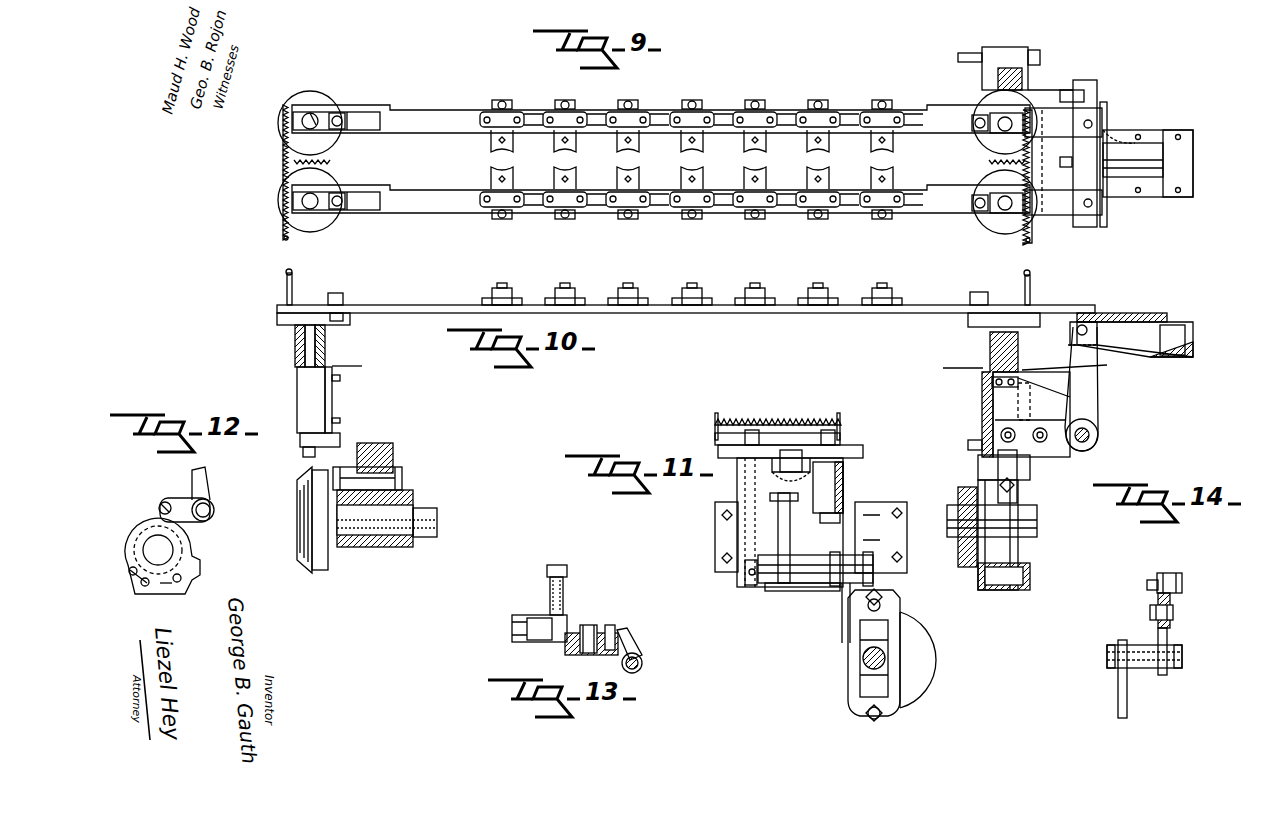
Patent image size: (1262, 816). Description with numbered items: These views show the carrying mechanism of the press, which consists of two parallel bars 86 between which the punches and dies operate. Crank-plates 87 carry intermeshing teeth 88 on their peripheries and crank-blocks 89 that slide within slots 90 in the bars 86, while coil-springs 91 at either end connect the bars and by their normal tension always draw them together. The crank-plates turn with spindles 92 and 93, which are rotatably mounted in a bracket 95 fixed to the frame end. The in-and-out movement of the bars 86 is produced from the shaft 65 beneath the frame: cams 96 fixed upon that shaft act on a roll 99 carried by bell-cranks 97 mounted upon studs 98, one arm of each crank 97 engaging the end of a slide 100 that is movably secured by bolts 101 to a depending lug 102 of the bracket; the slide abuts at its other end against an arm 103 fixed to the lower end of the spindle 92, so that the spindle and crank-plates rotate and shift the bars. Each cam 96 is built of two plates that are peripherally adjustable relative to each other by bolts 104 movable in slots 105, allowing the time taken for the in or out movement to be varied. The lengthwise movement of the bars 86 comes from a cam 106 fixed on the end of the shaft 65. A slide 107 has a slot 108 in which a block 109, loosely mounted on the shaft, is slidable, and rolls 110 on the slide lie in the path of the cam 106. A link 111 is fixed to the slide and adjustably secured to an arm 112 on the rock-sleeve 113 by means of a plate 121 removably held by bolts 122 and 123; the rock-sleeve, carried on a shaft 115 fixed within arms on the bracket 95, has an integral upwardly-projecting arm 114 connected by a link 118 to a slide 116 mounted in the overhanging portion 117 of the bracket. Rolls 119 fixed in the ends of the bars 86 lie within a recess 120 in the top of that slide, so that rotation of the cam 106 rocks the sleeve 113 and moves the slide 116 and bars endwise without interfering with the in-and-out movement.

In FIG. 9, the parallel bars 86 is at (448, 108).
In FIG. 9, the crank-plates 87 is at (315, 92).
In FIG. 9, the intermeshing teeth 88 is at (325, 162).
In FIG. 9, the crank-blocks 89 is at (340, 113).
In FIG. 9, the slots 90 is at (360, 208).
In FIG. 9, the coil-springs 91 is at (290, 160).
In FIG. 9, the spindle 93 is at (300, 118).
In FIG. 9, the slide 116 is at (1150, 143).
In FIG. 9, the recess 120 is at (1088, 180).
In FIG. 10, the spindle 92 is at (297, 350).
In FIG. 13, the spindle 92 is at (643, 664).
In FIG. 10, the studs 98 is at (393, 470).
In FIG. 10, the shaft 65 is at (437, 522).
In FIG. 10, the rolls 110 is at (980, 465).
In FIG. 10, the overhanging portion 117 is at (1175, 352).
In FIG. 10, the link 118 is at (1130, 317).
In FIG. 10, the rolls 119 is at (1088, 325).
In FIG. 11, the bracket 95 is at (843, 485).
In FIG. 11, the upwardly-projecting arm 114 is at (790, 540).
In FIG. 11, the shaft 115 is at (752, 580).
In FIG. 11, the link 111 is at (845, 600).
In FIG. 14, the link 111 is at (1175, 578).
In FIG. 11, the slide 107 is at (900, 615).
In FIG. 11, the slot 108 is at (878, 642).
In FIG. 11, the block 109 is at (868, 660).
In FIG. 11, the cam 106 is at (945, 668).
In FIG. 12, the cams 96 is at (192, 548).
In FIG. 12, the bell-cranks 97 is at (215, 518).
In FIG. 12, the roll 99 is at (160, 507).
In FIG. 12, the bolts 104 is at (182, 580).
In FIG. 12, the slots 105 is at (170, 587).
In FIG. 13, the slide 100 is at (588, 628).
In FIG. 13, the bolts 101 is at (615, 630).
In FIG. 13, the depending lug 102 is at (592, 655).
In FIG. 13, the arm 103 is at (642, 647).
In FIG. 14, the arm 112 is at (1168, 640).
In FIG. 14, the rock-sleeve 113 is at (1148, 668).
In FIG. 14, the plate 121 is at (1172, 610).
In FIG. 14, the bolt 122 is at (1150, 613).
In FIG. 14, the bolt 123 is at (1150, 585).